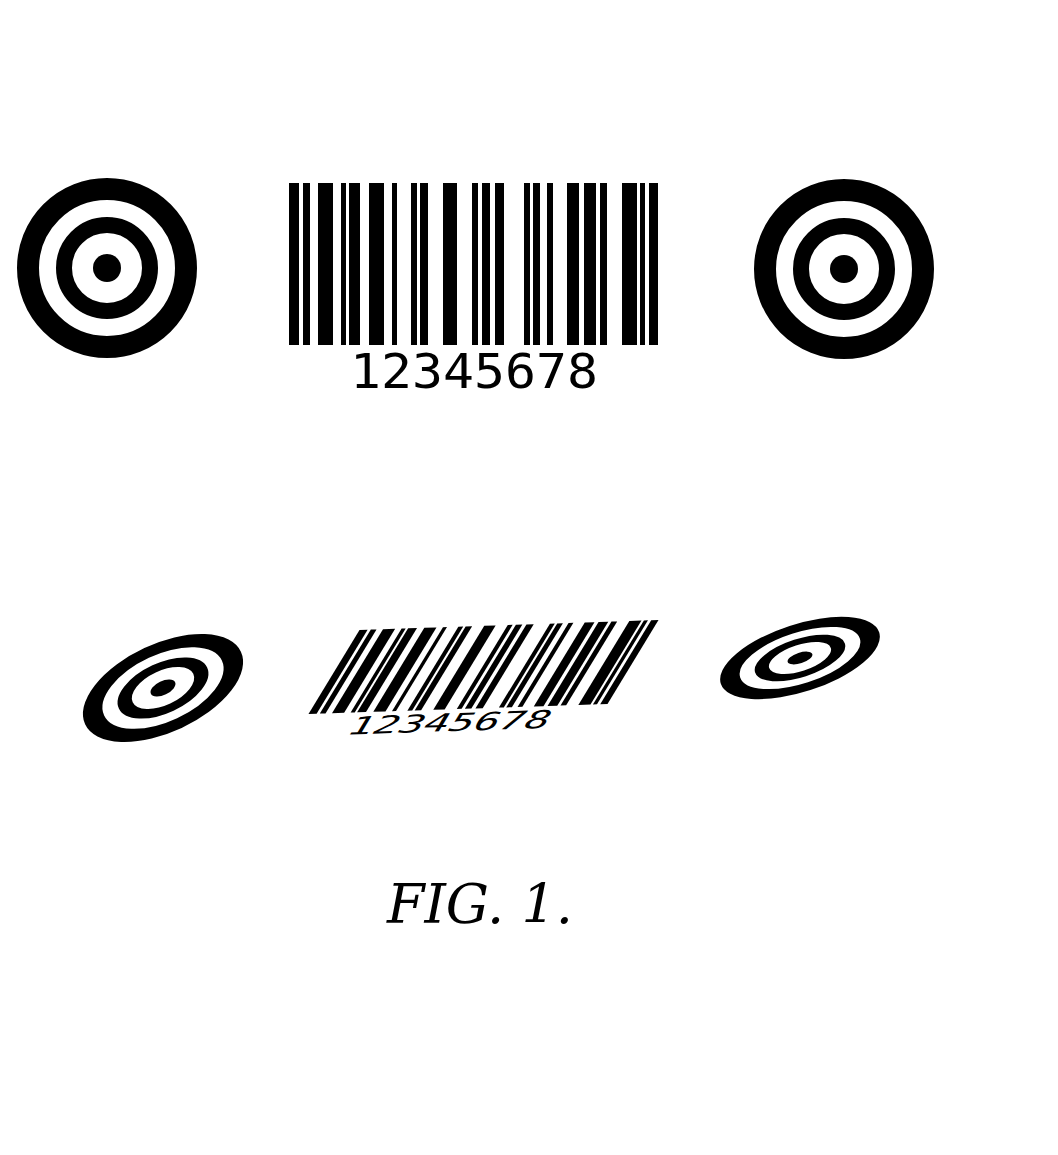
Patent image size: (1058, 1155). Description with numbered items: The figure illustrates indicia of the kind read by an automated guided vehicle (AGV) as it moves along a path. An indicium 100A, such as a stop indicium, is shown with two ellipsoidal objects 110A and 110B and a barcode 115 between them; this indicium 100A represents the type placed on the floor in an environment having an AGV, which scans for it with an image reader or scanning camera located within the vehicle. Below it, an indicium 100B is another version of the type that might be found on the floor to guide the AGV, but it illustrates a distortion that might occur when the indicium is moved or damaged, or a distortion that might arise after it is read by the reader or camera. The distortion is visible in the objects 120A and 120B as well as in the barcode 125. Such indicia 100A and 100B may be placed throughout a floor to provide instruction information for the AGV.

The indicium 100A is at (772, 77).
The indicium 100B is at (717, 545).
The ellipsoidal object 110A is at (134, 182).
The ellipsoidal object 110B is at (848, 181).
The barcode 115 is at (500, 183).
The object 120A is at (202, 633).
The object 120B is at (817, 620).
The barcode 125 is at (490, 626).